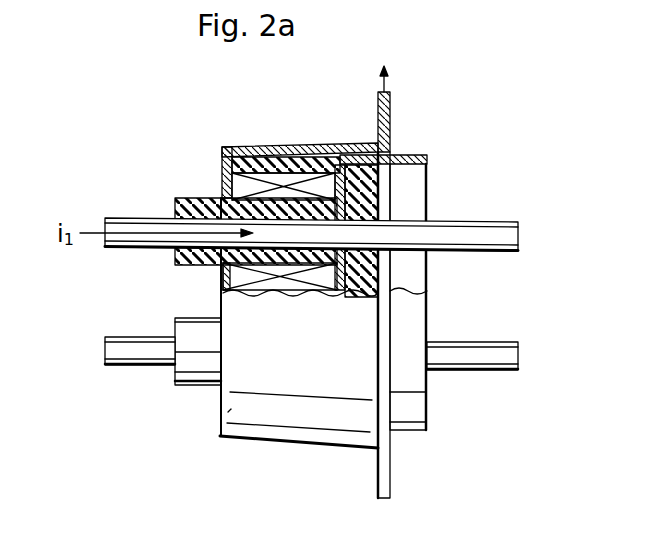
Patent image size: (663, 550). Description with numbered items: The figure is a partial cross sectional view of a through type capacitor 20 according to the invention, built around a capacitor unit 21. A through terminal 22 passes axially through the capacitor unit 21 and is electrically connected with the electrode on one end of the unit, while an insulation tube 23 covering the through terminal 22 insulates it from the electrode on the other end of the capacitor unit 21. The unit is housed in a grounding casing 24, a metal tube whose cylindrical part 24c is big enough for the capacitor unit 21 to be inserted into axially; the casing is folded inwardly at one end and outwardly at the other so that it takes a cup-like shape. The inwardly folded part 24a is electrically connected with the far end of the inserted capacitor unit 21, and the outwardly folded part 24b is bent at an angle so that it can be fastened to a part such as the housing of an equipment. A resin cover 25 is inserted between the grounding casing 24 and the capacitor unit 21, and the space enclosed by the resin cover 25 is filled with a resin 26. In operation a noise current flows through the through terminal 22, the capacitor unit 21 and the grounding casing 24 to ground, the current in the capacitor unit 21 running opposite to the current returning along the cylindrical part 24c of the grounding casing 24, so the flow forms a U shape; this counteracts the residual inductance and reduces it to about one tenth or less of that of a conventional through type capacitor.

The through type capacitor 20 is at (103, 411).
The capacitor unit 21 is at (320, 183).
The through terminal 22 is at (510, 240).
The insulation tube 23 is at (188, 196).
The grounding casing 24 is at (253, 442).
The inwardly folded part 24a is at (222, 198).
The outwardly folded part 24b is at (390, 118).
The cylindrical part 24c is at (312, 430).
The resin cover 25 is at (428, 158).
The resin 26 is at (372, 202).